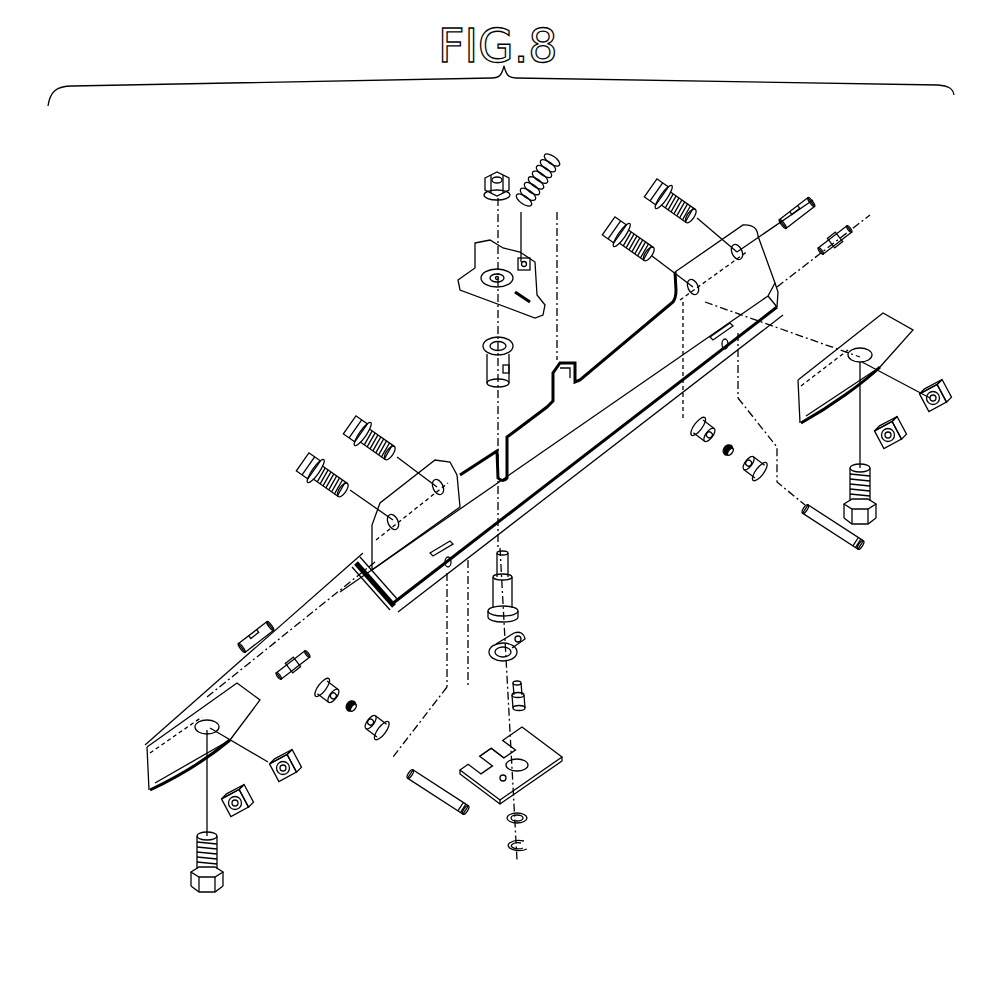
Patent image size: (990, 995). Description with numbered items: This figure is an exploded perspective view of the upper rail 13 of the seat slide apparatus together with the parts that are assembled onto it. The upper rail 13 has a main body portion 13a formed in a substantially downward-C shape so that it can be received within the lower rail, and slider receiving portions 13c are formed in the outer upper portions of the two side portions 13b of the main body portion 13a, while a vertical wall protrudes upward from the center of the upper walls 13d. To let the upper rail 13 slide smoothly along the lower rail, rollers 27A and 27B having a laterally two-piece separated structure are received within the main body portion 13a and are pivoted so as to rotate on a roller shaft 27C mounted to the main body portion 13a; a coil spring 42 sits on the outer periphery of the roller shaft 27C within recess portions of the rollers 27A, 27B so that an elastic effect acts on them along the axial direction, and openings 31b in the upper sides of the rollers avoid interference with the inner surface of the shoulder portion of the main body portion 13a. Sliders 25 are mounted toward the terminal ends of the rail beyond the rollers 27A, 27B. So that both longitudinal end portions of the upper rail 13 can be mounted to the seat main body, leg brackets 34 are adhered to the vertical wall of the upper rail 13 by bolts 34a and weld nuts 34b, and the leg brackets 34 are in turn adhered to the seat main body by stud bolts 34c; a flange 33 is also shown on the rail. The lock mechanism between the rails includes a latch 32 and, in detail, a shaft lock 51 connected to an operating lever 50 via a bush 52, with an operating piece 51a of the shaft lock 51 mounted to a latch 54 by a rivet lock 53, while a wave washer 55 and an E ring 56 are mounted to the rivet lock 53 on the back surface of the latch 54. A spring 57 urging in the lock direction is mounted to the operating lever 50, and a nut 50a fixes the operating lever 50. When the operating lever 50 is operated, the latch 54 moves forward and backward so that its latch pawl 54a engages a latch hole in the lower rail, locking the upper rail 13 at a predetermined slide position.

The upper rail 13 is at (594, 482).
The main body portion 13a is at (570, 470).
The side portion 13b is at (682, 308).
The slider receiving portion 13c is at (358, 560).
The upper wall 13d is at (620, 418).
The slider 25 is at (805, 206).
The roller 27A is at (698, 442).
The roller 27B is at (757, 481).
The roller shaft 27C is at (822, 538).
The opening 31b is at (448, 548).
The latch 32 is at (404, 604).
The flange 33 is at (605, 372).
The leg bracket 34 is at (890, 333).
The bolt 34a is at (614, 212).
The weld nut 34b is at (942, 420).
The stud bolt 34c is at (880, 504).
The coil spring 42 is at (727, 458).
The operating lever 50 is at (468, 278).
The nut 50a is at (487, 183).
The shaft lock 51 is at (512, 588).
The operating piece 51a is at (522, 638).
The bush 52 is at (486, 360).
The rivet lock 53 is at (525, 700).
The latch 54 is at (540, 752).
The latch pawl 54a is at (493, 735).
The wave washer 55 is at (528, 815).
The E ring 56 is at (530, 845).
The spring 57 is at (530, 166).